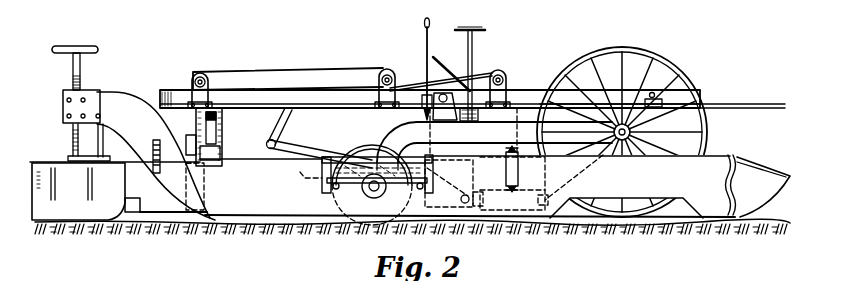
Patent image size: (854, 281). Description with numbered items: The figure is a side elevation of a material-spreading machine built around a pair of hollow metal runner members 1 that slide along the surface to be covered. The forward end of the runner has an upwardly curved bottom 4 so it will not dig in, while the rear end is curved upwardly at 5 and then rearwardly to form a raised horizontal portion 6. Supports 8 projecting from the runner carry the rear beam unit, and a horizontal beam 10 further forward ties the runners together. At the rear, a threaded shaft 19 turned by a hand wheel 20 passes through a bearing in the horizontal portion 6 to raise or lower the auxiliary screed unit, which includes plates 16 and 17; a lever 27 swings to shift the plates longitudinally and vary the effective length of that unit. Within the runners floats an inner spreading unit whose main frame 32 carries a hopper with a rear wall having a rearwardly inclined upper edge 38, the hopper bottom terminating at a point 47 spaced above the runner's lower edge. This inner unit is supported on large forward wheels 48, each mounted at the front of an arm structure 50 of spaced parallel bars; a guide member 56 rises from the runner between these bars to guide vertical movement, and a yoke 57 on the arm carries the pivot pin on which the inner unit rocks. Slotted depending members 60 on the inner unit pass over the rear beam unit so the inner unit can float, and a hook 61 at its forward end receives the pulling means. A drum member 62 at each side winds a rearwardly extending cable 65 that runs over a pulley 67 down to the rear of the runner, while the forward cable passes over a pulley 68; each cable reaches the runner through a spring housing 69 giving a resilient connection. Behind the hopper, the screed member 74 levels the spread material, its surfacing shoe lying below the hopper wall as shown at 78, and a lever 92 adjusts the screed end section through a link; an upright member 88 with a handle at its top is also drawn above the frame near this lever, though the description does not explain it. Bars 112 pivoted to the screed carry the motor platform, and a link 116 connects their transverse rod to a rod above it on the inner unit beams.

The runner member 1 is at (260, 213).
The upwardly curved bottom 4 is at (770, 205).
The upwardly curved rear end 5 is at (128, 115).
The horizontal portion 6 is at (67, 101).
The support 8 is at (216, 130).
The beam 10 is at (306, 179).
The plate 16 is at (132, 212).
The plate 17 is at (73, 173).
The shaft 19 is at (81, 71).
The hand wheel 20 is at (92, 47).
The lever 27 is at (96, 137).
The main frame 32 is at (325, 90).
The rearwardly inclined upper edge 38 is at (445, 62).
The bottom termination point 47 is at (515, 220).
The forward wheel 48 is at (602, 48).
The arm structure 50 is at (553, 130).
The guide member 56 is at (494, 139).
The yoke 57 is at (430, 116).
The depending member 60 is at (223, 145).
The hook 61 is at (657, 106).
The drum member 62 is at (386, 68).
The rearwardly extending cable 65 is at (283, 72).
The pulley 67 is at (201, 73).
The pulley 68 is at (508, 73).
The spring housing 69 is at (186, 140).
The screed member 74 is at (430, 212).
The surfacing member position 78 is at (476, 217).
The hand wheel 88 is at (482, 30).
The lever 92 is at (425, 31).
The bar 112 is at (287, 149).
The link 116 is at (290, 122).